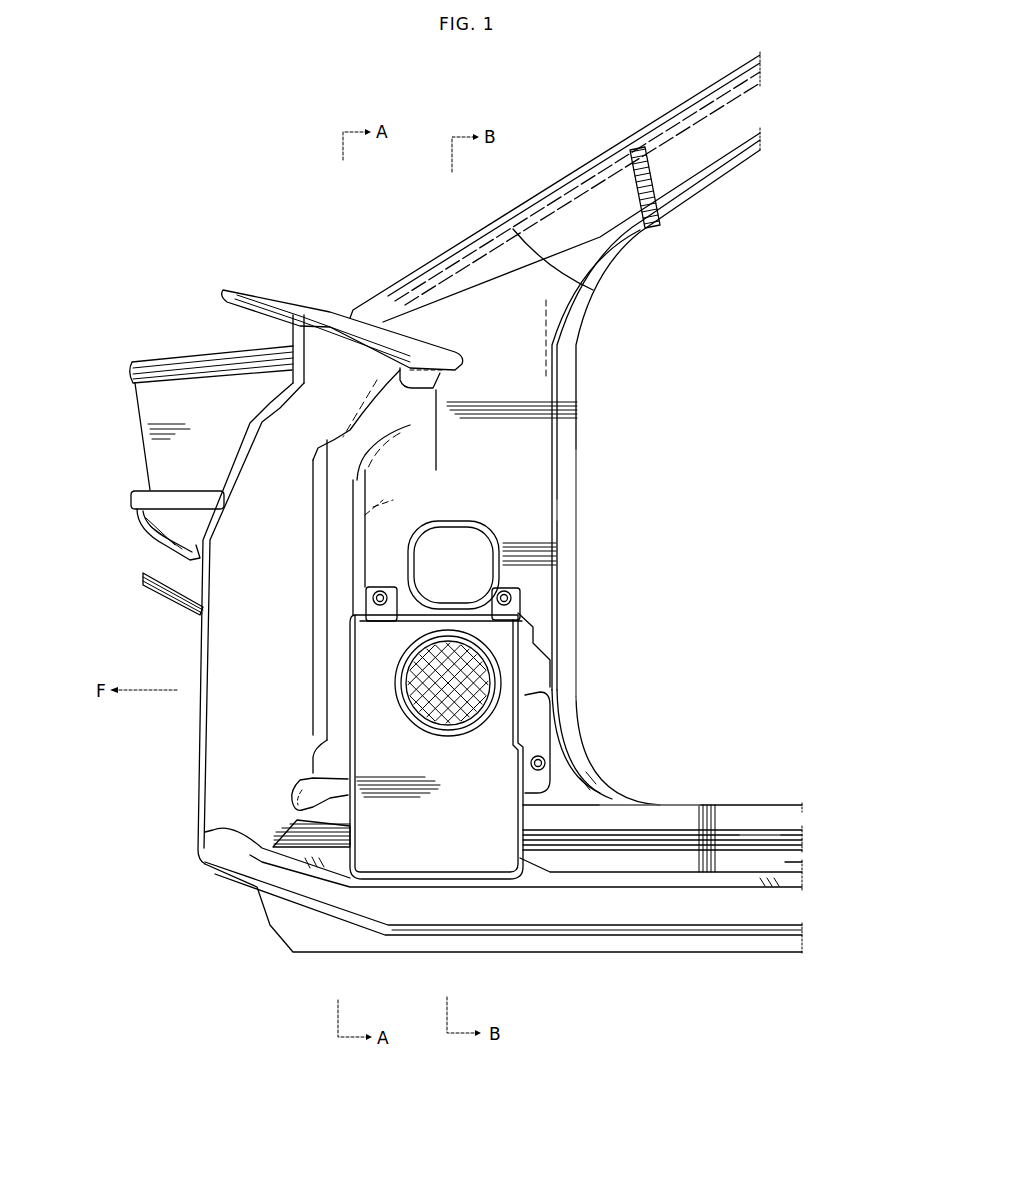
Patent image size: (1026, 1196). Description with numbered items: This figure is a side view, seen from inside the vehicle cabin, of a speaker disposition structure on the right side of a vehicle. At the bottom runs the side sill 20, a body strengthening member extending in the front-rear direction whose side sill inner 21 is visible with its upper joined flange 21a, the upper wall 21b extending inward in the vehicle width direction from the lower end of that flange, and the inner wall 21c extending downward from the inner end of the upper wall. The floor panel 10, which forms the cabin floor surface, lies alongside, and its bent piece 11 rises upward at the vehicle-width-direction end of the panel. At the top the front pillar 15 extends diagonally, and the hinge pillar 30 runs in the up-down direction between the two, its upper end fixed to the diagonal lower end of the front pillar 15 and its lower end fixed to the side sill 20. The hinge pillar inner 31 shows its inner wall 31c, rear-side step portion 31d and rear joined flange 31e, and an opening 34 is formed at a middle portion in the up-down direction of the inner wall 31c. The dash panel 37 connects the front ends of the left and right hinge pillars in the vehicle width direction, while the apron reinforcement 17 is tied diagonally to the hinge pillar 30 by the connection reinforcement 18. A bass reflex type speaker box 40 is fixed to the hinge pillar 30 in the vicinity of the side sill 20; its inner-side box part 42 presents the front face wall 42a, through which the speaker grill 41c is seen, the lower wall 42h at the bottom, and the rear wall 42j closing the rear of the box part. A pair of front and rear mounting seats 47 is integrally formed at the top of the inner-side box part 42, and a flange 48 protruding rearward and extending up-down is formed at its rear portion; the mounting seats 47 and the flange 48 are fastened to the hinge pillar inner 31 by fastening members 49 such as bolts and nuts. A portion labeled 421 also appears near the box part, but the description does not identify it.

The floor panel 10 is at (680, 923).
The bent piece 11 is at (611, 871).
The front pillar 15 is at (583, 181).
The apron reinforcement 17 is at (167, 355).
The connection reinforcement 18 is at (143, 527).
The side sill 20 is at (743, 800).
The side sill inner 21 is at (662, 846).
The upper joined flange 21a is at (663, 805).
The upper wall 21b is at (768, 832).
The inner wall 21c is at (795, 859).
The hinge pillar 30 is at (582, 481).
The hinge pillar inner 31 is at (541, 360).
The inner wall 31c is at (493, 468).
The rear-side step portion 31d is at (563, 513).
The rear joined flange 31e is at (571, 544).
The opening 34 is at (481, 537).
The dash panel 37 is at (202, 640).
The speaker box 40 is at (335, 757).
The speaker grill 41c is at (400, 681).
The inner-side box part 42 is at (339, 692).
The front face wall 42a is at (449, 769).
The lower wall 42h is at (439, 872).
The rear wall 42j is at (557, 697).
The bracket tongue portion 421 is at (296, 792).
The mounting seats 47 is at (382, 586).
The flange 48 is at (543, 662).
The fastening members 49 is at (383, 622).